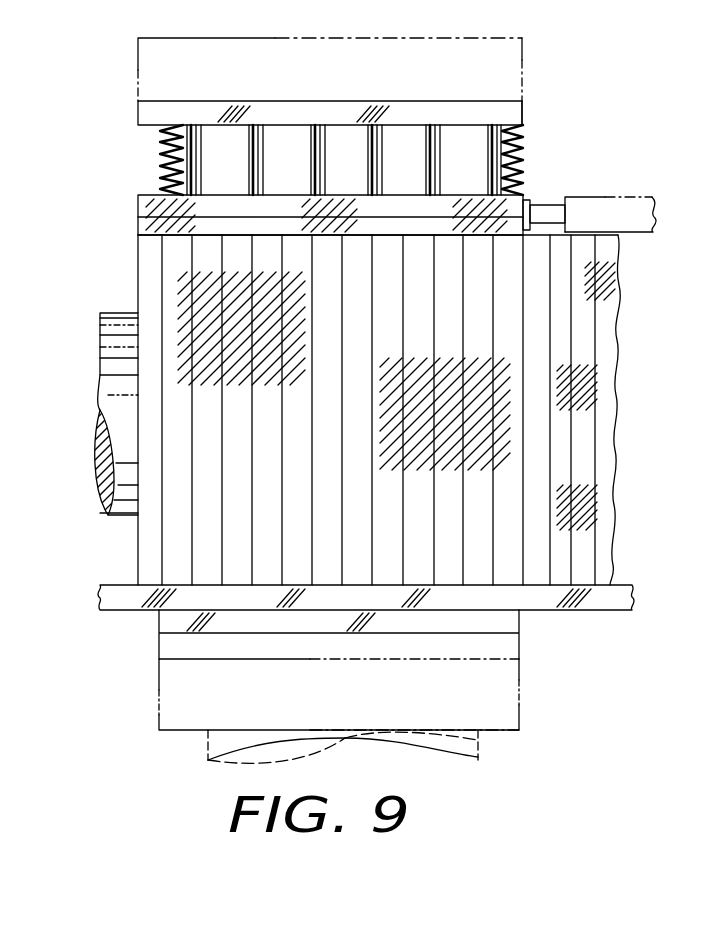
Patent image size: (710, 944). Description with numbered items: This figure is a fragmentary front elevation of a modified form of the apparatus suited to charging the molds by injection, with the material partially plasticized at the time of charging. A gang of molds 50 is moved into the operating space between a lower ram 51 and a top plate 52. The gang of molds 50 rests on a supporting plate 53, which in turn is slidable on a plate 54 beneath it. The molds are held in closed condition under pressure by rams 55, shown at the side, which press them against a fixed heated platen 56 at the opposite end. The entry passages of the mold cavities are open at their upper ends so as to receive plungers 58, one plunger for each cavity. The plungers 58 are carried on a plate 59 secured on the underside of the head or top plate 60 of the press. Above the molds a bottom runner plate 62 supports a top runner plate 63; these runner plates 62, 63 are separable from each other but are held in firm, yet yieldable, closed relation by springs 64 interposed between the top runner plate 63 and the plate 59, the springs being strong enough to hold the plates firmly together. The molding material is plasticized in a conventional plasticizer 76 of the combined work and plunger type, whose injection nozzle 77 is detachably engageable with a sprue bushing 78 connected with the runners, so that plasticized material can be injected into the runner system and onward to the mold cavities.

The gang of molds 50 is at (503, 565).
The ram 51 is at (160, 720).
The top plate 52 is at (138, 92).
The supporting plate 53 is at (132, 603).
The plate 54 is at (162, 650).
The rams 55 is at (122, 515).
The fixed heated platen 56 is at (552, 572).
The plungers 58 is at (320, 178).
The plate 59 is at (523, 112).
The head or top plate of a press 60 is at (520, 62).
The bottom runner plate 62 is at (138, 225).
The top runner plate 63 is at (148, 195).
The springs 64 is at (523, 148).
The plasticizer 76 is at (630, 200).
The injection nozzle 77 is at (555, 208).
The sprue bushing 78 is at (530, 205).